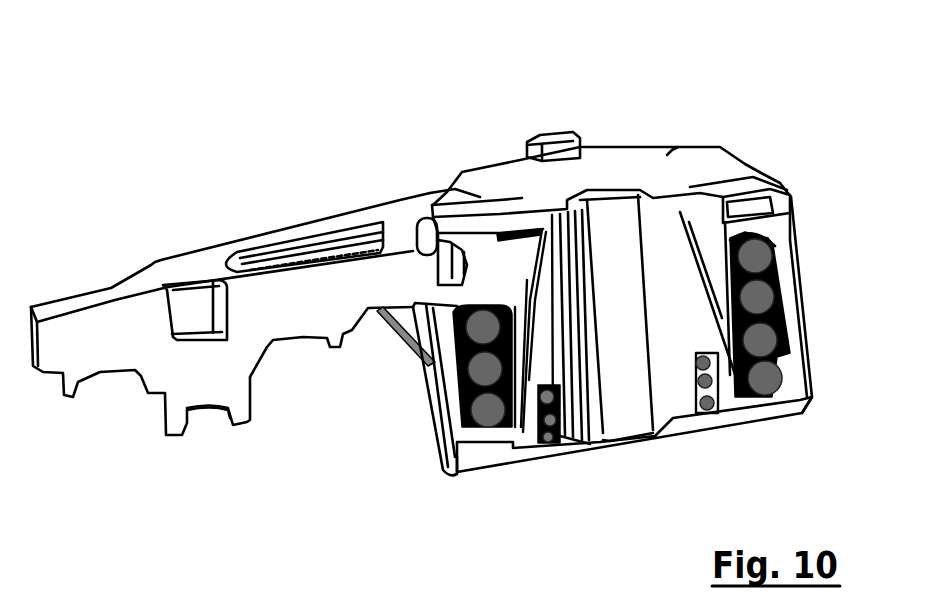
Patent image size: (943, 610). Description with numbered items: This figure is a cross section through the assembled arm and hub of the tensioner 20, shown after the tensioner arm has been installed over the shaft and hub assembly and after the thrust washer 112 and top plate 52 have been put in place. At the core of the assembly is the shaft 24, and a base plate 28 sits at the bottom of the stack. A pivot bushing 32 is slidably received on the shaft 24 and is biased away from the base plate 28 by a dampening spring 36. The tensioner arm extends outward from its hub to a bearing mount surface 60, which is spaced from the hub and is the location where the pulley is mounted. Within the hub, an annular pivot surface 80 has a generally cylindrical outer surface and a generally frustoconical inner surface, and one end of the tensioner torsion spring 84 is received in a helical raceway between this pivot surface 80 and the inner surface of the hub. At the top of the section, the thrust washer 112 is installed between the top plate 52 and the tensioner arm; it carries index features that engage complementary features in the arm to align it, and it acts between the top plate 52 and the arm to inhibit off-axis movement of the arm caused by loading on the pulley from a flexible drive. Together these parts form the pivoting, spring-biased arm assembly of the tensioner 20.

The tensioner 20 is at (110, 120).
The shaft 24 is at (597, 432).
The base plate 28 is at (540, 457).
The pivot bushing 32 is at (540, 370).
The dampening spring 36 is at (545, 382).
The top plate 52 is at (630, 155).
The bearing mount surface 60 is at (107, 395).
The annular pivot surface 80 is at (513, 307).
The tensioner torsion spring 84 is at (487, 377).
The thrust washer 112 is at (520, 238).